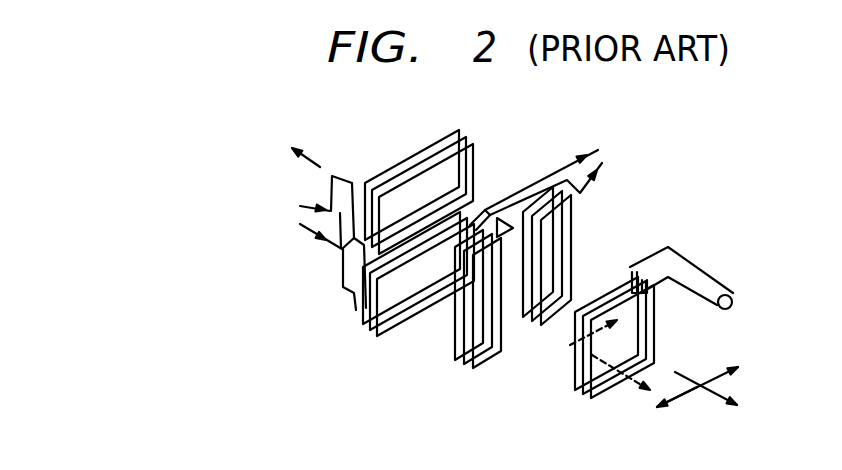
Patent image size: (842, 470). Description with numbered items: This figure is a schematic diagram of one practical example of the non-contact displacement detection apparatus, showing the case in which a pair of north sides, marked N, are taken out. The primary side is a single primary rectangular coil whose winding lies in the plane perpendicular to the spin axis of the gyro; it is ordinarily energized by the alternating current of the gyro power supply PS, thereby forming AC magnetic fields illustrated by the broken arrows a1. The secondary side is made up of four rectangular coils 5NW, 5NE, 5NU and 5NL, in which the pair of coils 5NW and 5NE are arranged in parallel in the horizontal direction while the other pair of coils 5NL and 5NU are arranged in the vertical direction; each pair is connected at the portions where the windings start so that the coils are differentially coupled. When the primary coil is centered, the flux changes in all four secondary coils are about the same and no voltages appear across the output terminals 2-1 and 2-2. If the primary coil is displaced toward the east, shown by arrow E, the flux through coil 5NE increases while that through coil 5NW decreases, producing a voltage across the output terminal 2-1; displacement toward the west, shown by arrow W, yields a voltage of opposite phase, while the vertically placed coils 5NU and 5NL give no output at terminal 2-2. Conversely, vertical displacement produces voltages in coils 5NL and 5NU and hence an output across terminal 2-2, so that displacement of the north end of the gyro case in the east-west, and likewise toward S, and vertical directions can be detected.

The secondary rectangular coil 5NU is at (474, 137).
The secondary rectangular coil 5NL is at (379, 328).
The secondary rectangular coil 5NW is at (463, 368).
The secondary rectangular coil 5NE is at (572, 297).
The output terminal 2-1 is at (598, 150).
The output terminal 2-2 is at (300, 224).
The gyro power supply PS is at (723, 287).
The broken arrow a1 is at (668, 357).
The north side N is at (302, 137).
The arrow E is at (733, 368).
The arrow W is at (662, 407).
The south direction S is at (738, 403).